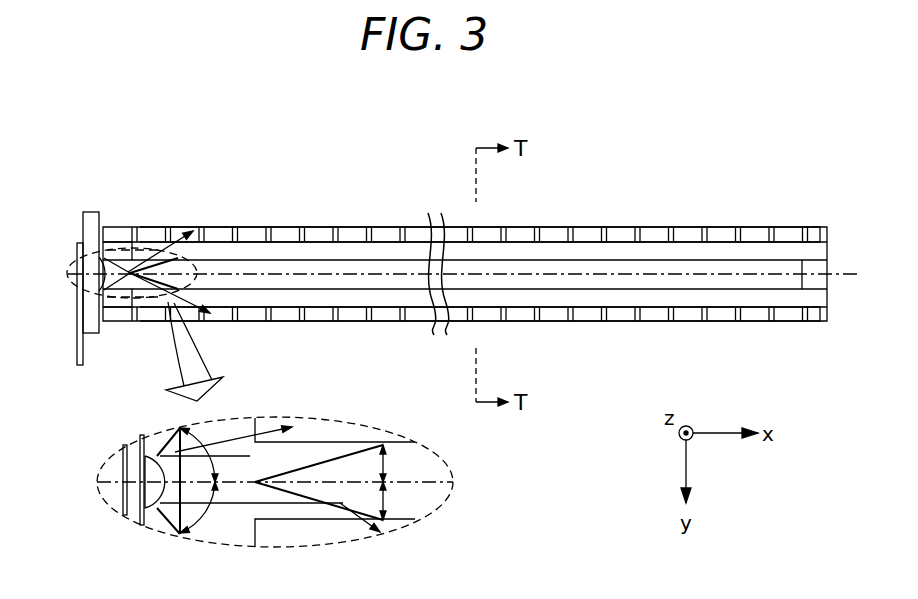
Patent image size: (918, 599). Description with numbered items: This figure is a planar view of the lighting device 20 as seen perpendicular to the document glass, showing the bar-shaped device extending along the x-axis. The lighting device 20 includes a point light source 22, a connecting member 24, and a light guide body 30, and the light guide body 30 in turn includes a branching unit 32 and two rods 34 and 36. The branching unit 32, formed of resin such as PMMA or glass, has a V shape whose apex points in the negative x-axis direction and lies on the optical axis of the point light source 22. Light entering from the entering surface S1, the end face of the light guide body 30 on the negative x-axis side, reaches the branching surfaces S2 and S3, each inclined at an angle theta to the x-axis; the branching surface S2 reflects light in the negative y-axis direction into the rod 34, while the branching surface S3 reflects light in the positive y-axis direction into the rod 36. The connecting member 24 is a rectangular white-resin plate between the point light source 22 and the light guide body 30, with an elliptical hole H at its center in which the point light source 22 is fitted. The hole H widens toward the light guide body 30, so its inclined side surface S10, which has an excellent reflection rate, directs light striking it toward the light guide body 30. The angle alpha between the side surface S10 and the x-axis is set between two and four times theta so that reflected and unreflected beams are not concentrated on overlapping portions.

The lighting device 20 is at (292, 91).
The point light source 22 is at (78, 266).
The connecting member 24 is at (88, 222).
The light guide body 30 is at (163, 150).
The branching unit 32 is at (131, 256).
The rod 34 is at (285, 248).
The rod 36 is at (285, 298).
The entering surface S1 is at (102, 255).
The branching surface S2 is at (164, 245).
The branching surface S3 is at (143, 300).
The side surface of the hole S10 is at (157, 522).
The hole H is at (116, 292).